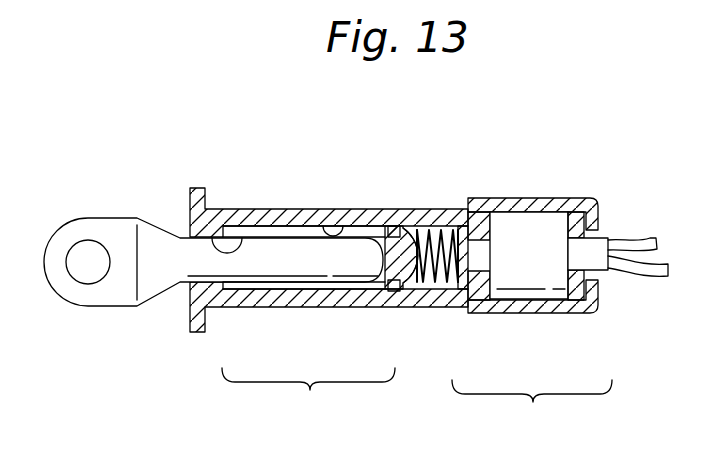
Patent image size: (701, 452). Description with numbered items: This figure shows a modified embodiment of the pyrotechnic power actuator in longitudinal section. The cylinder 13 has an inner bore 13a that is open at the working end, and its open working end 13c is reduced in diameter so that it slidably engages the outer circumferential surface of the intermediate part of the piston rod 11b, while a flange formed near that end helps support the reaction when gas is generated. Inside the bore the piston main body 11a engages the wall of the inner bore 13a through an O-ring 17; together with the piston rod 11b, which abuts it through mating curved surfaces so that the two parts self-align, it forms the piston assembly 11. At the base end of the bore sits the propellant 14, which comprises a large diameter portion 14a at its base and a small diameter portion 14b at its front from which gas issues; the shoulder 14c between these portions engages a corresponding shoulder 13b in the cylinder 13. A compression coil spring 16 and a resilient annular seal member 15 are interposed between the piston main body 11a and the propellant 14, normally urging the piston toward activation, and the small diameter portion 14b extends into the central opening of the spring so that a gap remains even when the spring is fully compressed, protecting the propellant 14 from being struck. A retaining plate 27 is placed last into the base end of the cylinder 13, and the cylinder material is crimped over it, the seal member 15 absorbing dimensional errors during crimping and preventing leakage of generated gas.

The piston assembly 11 is at (219, 322).
The piston main body 11a is at (383, 288).
The piston rod 11b is at (262, 283).
The cylinder 13 is at (290, 209).
The inner bore 13a is at (338, 226).
The shoulder 13b is at (500, 230).
The open working end 13c is at (243, 231).
The propellant 14 is at (560, 340).
The large diameter portion 14a is at (541, 297).
The small diameter portion 14b is at (471, 298).
The shoulder 14c is at (497, 292).
The seal member 15 is at (468, 226).
The compression coil spring 16 is at (438, 288).
The O-ring 17 is at (395, 227).
The retaining plate 27 is at (574, 210).